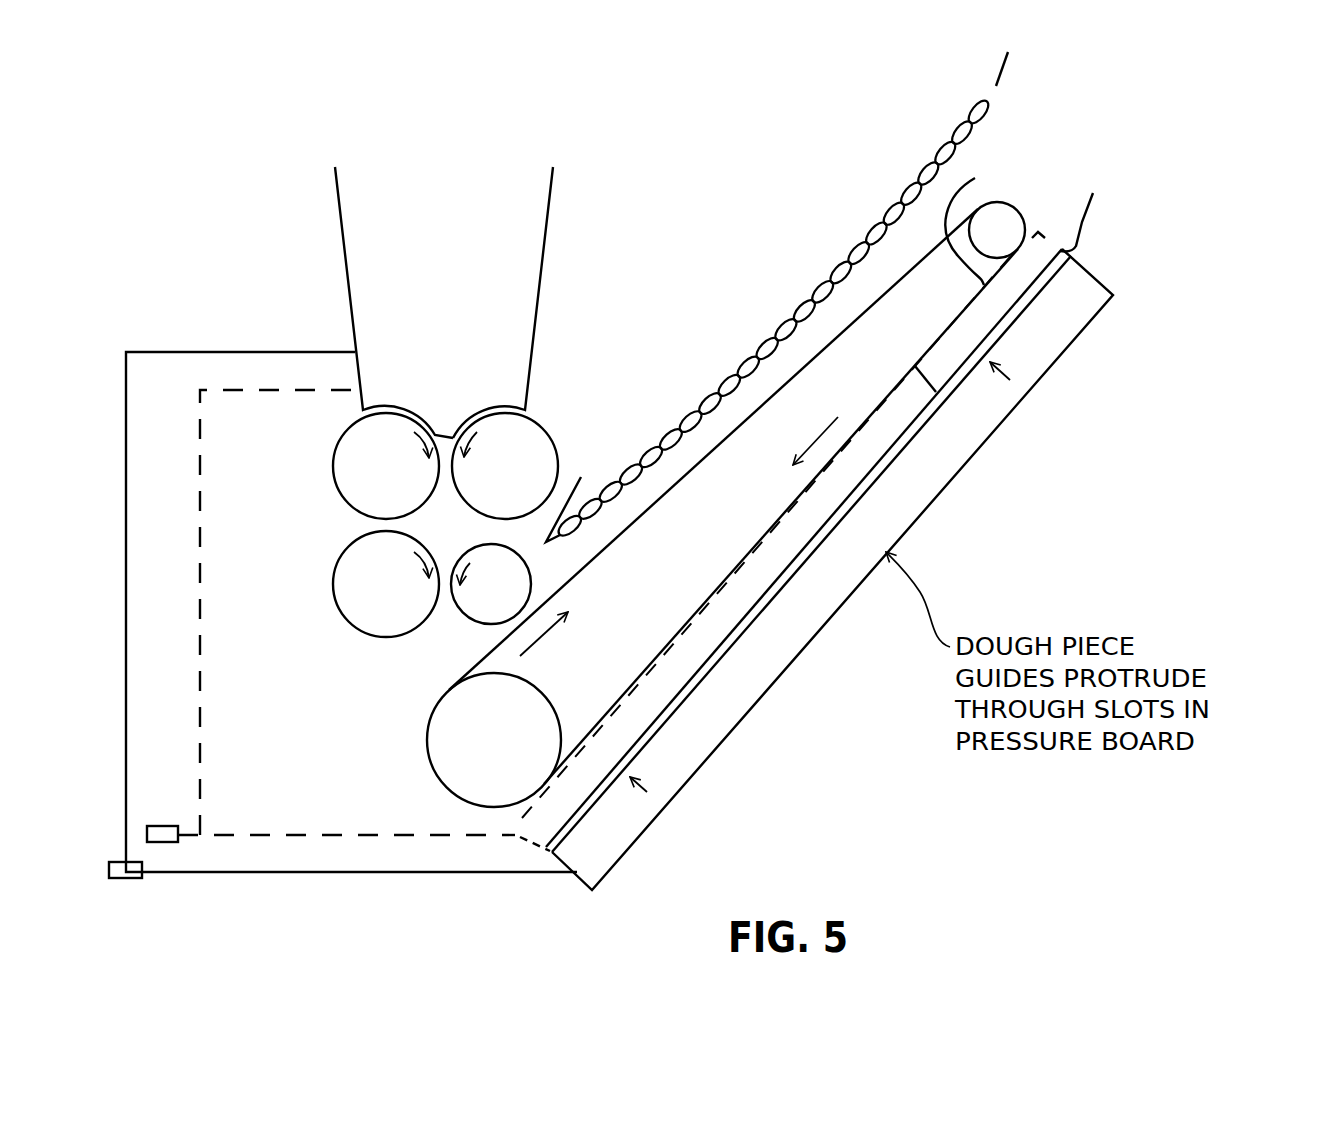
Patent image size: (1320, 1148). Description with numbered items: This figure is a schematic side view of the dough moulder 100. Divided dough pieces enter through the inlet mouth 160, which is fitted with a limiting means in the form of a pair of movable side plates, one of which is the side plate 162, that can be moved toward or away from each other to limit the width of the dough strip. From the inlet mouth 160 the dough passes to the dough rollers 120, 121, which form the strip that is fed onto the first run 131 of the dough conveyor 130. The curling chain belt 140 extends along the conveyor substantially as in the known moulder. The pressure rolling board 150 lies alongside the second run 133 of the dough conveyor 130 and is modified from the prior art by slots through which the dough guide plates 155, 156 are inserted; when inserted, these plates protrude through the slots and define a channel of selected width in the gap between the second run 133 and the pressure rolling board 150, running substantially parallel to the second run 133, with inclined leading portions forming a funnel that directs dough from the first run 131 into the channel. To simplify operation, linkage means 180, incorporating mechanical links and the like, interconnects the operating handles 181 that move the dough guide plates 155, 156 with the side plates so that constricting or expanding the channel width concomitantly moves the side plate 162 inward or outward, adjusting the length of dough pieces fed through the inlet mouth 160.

The moulder 100 is at (703, 497).
The dough rollers 120 is at (331, 455).
The dough rollers 121 is at (331, 578).
The dough conveyor 130 is at (408, 749).
The first run 131 is at (684, 475).
The second run 133 is at (985, 224).
The curling chain belt 140 is at (917, 172).
The pressure rolling board 150 is at (1087, 217).
The dough guide plate 155 is at (998, 314).
The dough guide plate 156 is at (981, 437).
The inlet mouth 160 is at (421, 302).
The side plate 162 is at (474, 276).
The linkage means 180 is at (389, 844).
The operating handles 181 is at (162, 842).